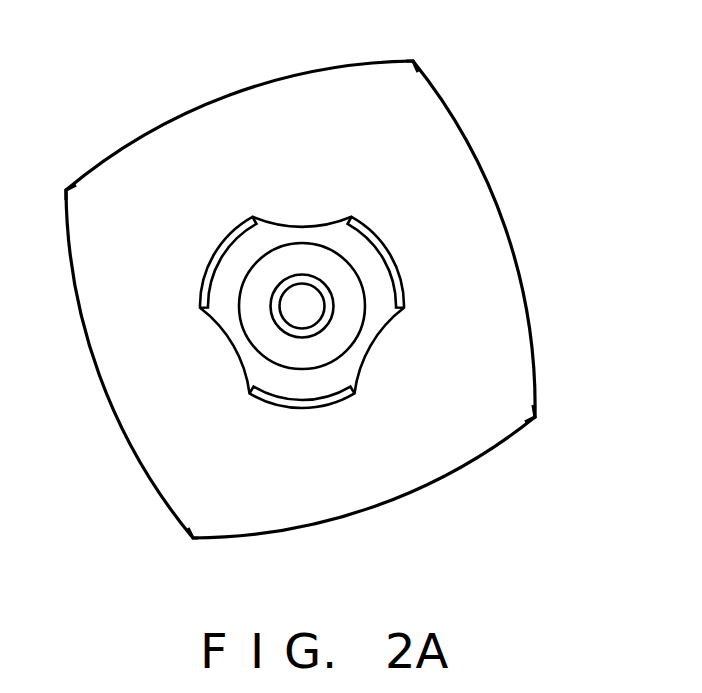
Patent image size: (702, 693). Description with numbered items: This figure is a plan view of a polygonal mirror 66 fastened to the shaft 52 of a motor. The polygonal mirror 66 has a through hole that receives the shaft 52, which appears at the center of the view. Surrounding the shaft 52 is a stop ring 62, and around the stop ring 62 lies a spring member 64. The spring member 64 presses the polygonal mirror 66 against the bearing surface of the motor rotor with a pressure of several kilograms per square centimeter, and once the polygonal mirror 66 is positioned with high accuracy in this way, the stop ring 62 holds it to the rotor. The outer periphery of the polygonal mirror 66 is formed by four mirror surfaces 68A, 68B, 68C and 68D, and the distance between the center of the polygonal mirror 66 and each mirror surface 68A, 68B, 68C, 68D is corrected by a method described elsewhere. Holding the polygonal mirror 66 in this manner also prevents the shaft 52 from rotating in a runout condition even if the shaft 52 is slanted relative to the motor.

The shaft 52 is at (303, 288).
The stop ring 62 is at (305, 337).
The spring member 64 is at (347, 372).
The polygonal mirror 66 is at (499, 347).
The mirror surface 68A is at (538, 397).
The mirror surface 68B is at (353, 61).
The mirror surface 68C is at (90, 343).
The mirror surface 68D is at (458, 472).